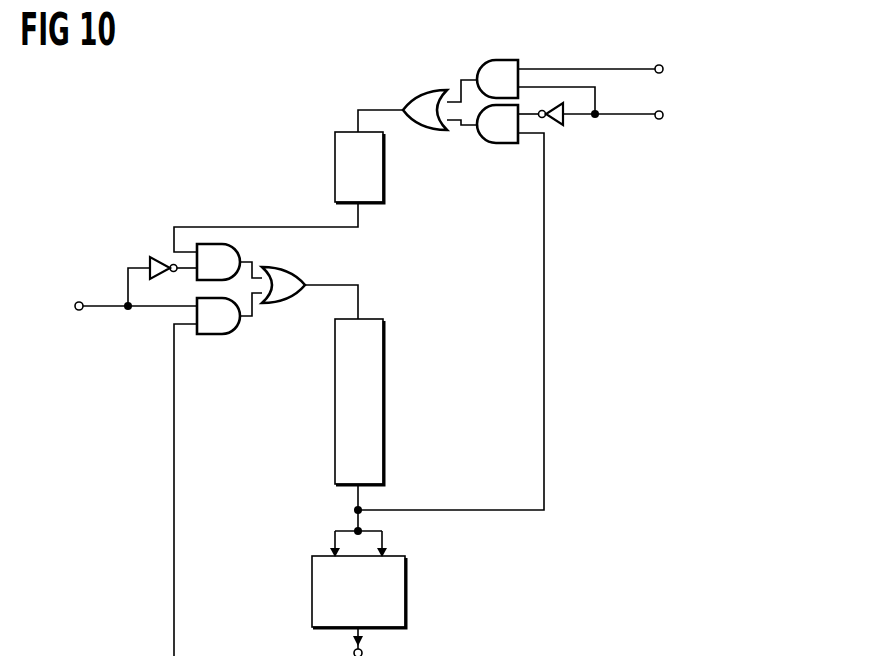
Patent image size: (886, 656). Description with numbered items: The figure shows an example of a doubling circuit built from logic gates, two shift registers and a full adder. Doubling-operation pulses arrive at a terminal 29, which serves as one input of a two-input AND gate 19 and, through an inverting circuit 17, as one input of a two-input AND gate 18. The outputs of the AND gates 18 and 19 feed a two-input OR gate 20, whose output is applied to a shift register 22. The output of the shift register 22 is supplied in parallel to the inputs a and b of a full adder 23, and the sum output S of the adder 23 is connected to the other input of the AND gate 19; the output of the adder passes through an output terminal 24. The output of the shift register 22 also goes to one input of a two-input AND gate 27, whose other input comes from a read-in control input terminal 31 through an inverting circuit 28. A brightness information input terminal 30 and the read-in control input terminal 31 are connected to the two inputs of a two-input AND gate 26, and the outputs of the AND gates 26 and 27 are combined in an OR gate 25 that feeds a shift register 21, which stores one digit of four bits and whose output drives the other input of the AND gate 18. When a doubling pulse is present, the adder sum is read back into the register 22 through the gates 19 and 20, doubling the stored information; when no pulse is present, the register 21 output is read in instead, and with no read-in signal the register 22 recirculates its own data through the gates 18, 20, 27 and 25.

The inverting circuit 17 is at (155, 256).
The 2-input AND gate 18 is at (233, 246).
The 2-input AND gate 19 is at (228, 334).
The 2-input OR gate 20 is at (292, 277).
The shift register 21 is at (334, 157).
The shift register 22 is at (386, 346).
The full adder 23 is at (406, 582).
The output terminal 24 is at (369, 651).
The OR gate 25 is at (422, 70).
The 2-input AND gate 26 is at (496, 61).
The 2-input AND gate 27 is at (507, 144).
The inverting circuit 28 is at (565, 121).
The terminal 29 is at (78, 301).
The brightness information input terminal 30 is at (664, 52).
The read-in control input terminal 31 is at (662, 120).